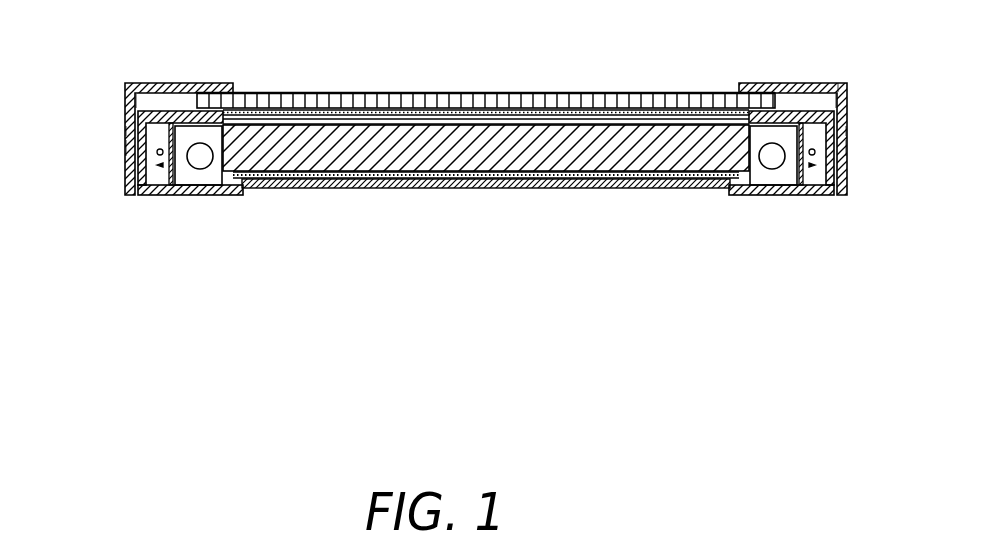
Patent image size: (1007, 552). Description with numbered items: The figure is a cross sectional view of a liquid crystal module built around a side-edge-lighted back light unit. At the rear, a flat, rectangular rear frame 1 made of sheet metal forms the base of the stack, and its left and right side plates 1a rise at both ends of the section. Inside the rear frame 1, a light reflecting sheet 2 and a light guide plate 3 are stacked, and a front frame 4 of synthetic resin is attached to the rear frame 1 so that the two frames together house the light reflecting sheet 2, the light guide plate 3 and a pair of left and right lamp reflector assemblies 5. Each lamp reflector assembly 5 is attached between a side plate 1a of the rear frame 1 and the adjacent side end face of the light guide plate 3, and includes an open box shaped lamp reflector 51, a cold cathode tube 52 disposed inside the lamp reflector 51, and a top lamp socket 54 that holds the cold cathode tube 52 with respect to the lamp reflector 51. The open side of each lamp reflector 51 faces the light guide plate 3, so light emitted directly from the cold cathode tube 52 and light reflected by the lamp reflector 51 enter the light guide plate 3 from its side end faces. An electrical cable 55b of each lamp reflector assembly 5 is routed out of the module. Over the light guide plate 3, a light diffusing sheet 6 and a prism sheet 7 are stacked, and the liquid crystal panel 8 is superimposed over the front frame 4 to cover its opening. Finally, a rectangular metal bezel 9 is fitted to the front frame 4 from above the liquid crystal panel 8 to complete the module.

The rear frame 1 is at (534, 188).
The left and right side plates 1a is at (125, 130).
The light reflecting sheet 2 is at (592, 190).
The light guide plate 3 is at (419, 189).
The front frame 4 is at (167, 103).
The lamp reflector assemblies 5 is at (125, 172).
The lamp reflector 51 is at (207, 110).
The cold cathode tube 52 is at (186, 185).
The top lamp socket 54 is at (215, 186).
The electrical cable 55b is at (125, 147).
The light diffusing sheet 6 is at (335, 118).
The prism sheet 7 is at (400, 110).
The liquid crystal panel 8 is at (553, 100).
The bezel 9 is at (828, 80).